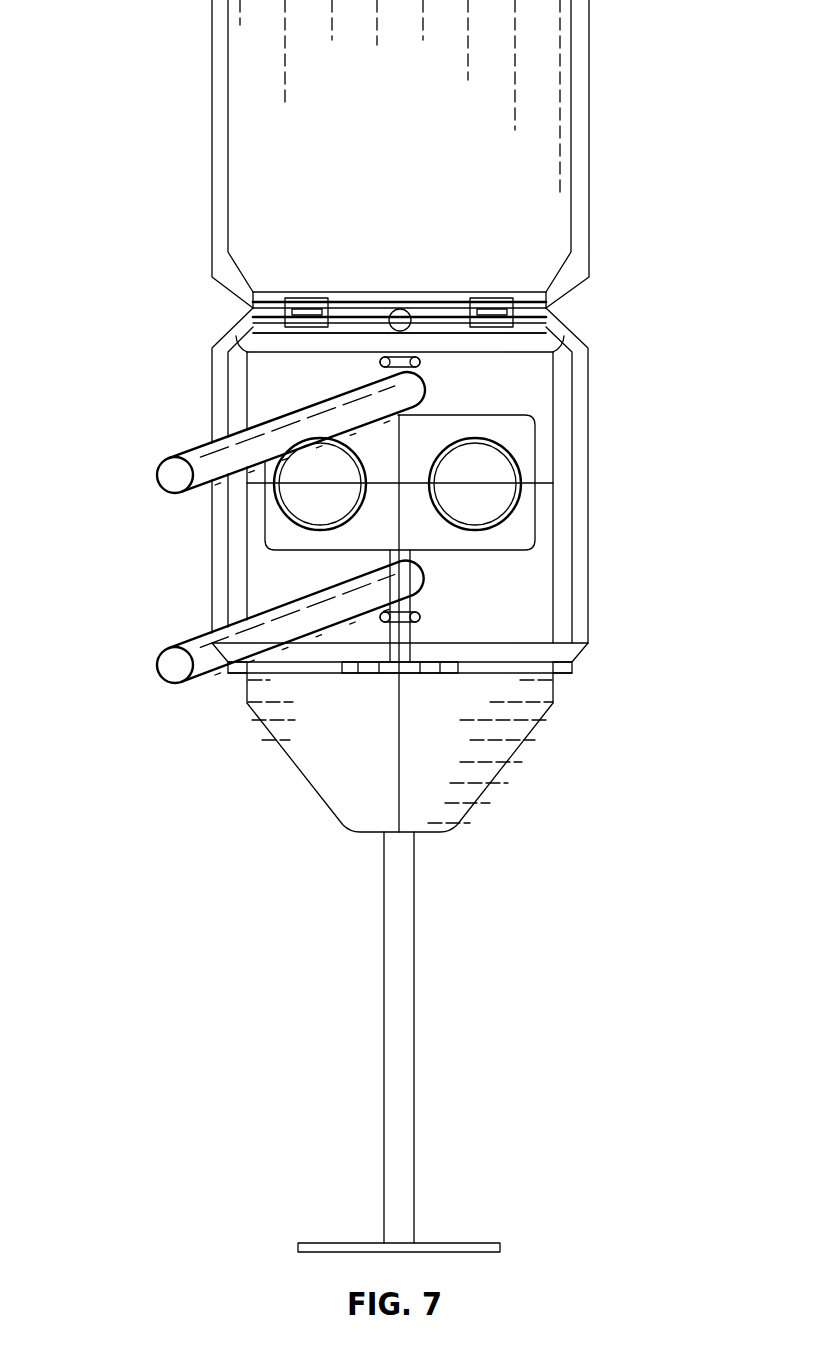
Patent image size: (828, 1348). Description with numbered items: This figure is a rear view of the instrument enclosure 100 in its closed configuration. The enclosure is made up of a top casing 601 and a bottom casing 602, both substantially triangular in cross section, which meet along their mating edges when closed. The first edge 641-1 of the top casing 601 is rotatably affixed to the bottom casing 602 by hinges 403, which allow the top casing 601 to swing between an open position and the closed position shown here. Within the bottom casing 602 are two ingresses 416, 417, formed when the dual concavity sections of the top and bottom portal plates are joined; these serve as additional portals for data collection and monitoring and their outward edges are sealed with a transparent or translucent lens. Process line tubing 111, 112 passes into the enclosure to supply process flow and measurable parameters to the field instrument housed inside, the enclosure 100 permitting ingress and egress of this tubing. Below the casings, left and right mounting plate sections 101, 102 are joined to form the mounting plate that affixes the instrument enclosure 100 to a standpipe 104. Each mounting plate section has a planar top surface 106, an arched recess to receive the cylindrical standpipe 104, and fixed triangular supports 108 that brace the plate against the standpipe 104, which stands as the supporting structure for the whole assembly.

The top casing 601 is at (179, 104).
The bottom casing 602 is at (190, 430).
The first edge of top casing 641-1 is at (440, 303).
The hinges 403 is at (308, 298).
The process line tubing 111 is at (423, 392).
The process line tubing 112 is at (420, 578).
The planar top surface 106 is at (378, 368).
The ingress 416 is at (503, 473).
The ingress 417 is at (300, 492).
The instrument enclosure 100 is at (200, 698).
The left mounting plate section 101 is at (237, 675).
The right mounting plate section 102 is at (572, 668).
The fixed triangular supports 108 is at (347, 795).
The standpipe 104 is at (405, 1145).